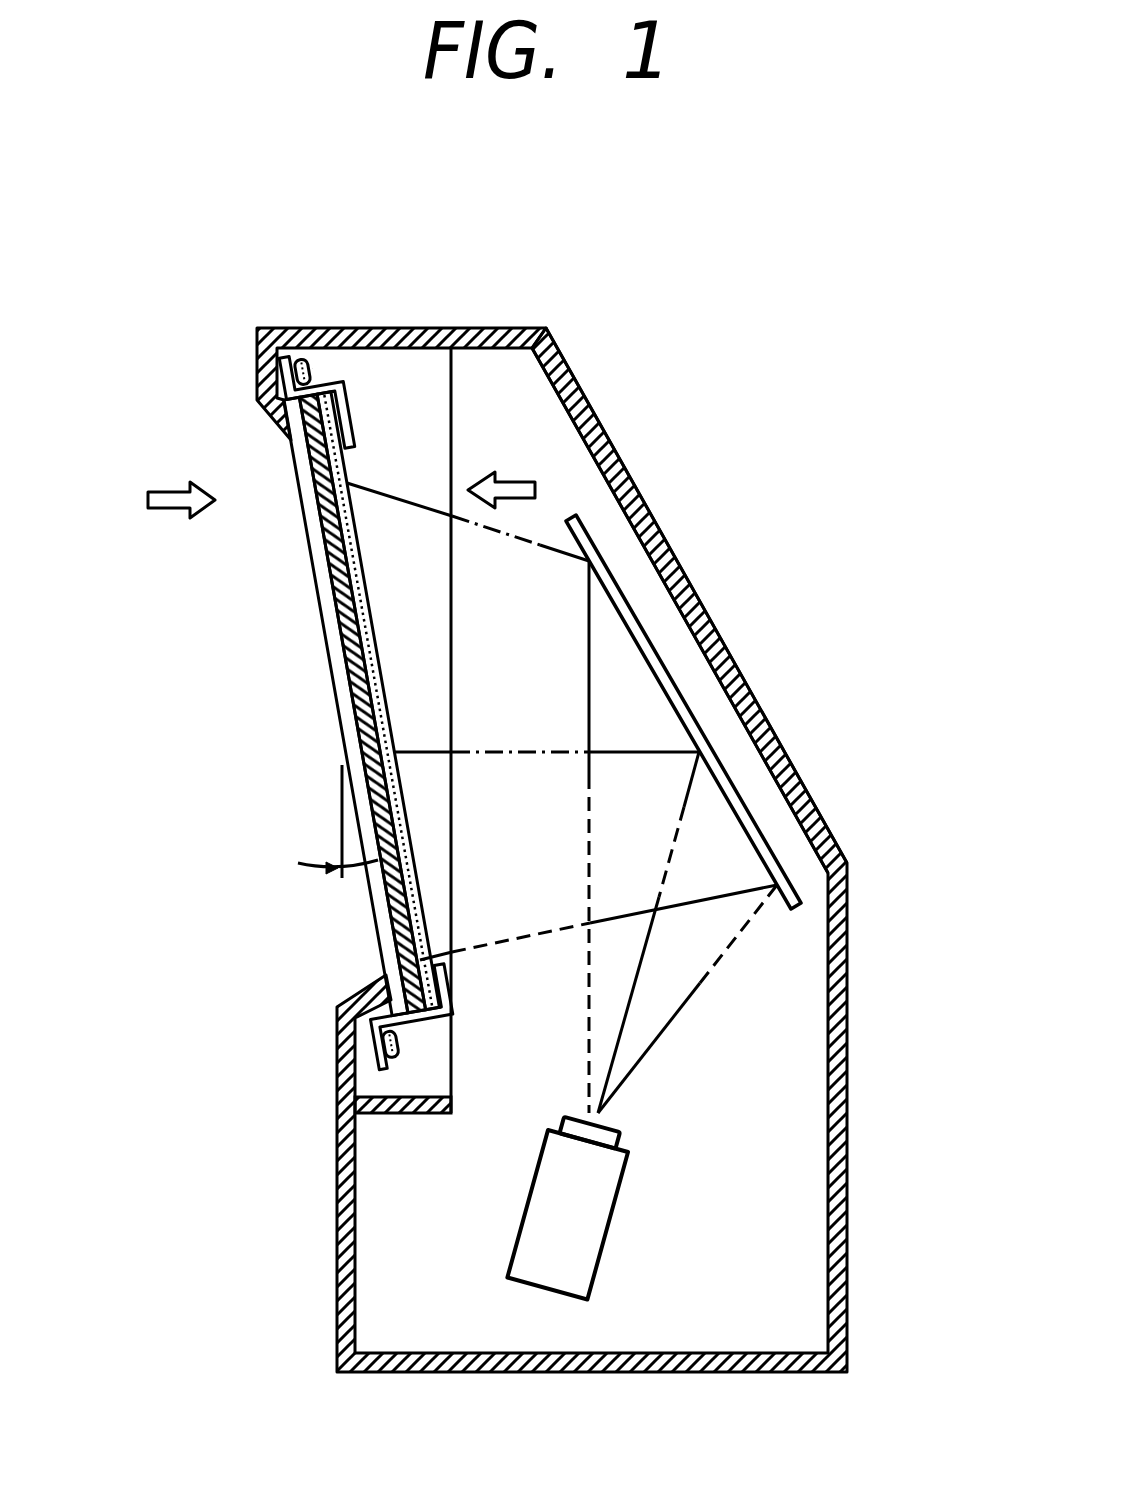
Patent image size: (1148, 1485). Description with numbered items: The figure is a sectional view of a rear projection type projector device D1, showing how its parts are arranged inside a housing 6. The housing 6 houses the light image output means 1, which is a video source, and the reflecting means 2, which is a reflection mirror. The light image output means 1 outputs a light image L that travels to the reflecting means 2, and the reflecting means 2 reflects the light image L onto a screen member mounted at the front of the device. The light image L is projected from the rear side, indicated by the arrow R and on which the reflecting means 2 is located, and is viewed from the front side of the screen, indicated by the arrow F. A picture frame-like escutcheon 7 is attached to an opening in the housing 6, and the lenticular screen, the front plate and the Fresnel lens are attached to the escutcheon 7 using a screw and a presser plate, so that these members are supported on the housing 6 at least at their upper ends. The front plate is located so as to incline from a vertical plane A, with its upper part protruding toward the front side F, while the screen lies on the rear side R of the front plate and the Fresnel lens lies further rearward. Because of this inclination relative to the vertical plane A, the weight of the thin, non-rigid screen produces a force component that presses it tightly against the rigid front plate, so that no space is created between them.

The light image output means 1 is at (583, 1258).
The reflecting means 2 is at (648, 637).
The housing 6 is at (655, 538).
The escutcheon 7 is at (258, 348).
The rear projection type projector device D1 is at (776, 244).
The light image L is at (635, 982).
The vertical plane A is at (342, 815).
The front side F is at (181, 484).
The rear side R is at (501, 472).